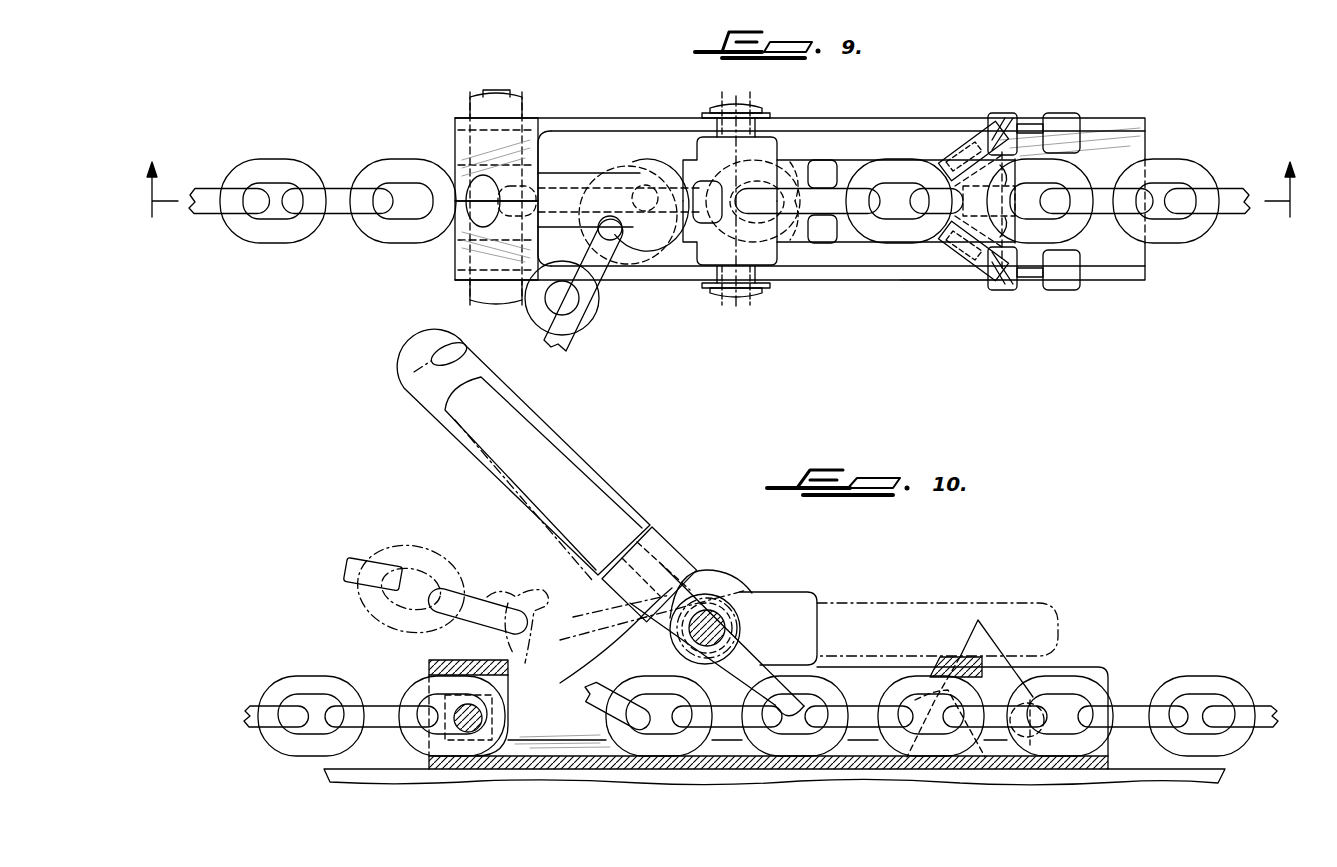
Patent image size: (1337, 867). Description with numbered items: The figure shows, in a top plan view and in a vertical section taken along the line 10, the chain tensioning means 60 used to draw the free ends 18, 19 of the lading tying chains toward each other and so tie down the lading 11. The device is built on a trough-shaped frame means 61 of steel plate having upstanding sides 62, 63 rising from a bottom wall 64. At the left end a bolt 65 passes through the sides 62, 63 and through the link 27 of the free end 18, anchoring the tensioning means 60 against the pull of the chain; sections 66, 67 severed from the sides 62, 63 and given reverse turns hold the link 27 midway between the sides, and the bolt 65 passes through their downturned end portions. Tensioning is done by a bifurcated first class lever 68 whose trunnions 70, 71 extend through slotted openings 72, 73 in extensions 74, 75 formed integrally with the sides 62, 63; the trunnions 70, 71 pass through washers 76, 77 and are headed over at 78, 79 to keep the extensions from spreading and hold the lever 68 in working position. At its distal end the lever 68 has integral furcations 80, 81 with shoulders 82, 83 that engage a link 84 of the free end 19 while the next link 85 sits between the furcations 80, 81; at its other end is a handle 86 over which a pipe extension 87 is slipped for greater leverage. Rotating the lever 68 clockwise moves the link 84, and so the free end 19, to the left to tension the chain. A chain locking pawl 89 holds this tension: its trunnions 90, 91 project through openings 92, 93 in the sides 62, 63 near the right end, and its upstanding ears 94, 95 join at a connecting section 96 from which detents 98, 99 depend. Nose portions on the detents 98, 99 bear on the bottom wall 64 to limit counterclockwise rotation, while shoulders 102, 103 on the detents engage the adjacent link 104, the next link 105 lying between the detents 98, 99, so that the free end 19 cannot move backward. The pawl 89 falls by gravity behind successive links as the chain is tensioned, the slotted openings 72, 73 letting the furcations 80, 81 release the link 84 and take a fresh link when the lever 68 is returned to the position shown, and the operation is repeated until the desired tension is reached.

In FIG. 9, the bed 10 is at (717, 203).
In FIG. 10, the lading 11 is at (523, 784).
In FIG. 9, the free end of chain 18 is at (310, 143).
In FIG. 10, the free end of chain 18 is at (252, 682).
In FIG. 9, the free end of chain 19 is at (1193, 149).
In FIG. 10, the free end of chain 19 is at (1179, 665).
In FIG. 9, the link 27 is at (422, 206).
In FIG. 10, the link 27 is at (420, 680).
In FIG. 9, the chain tensioning means 60 is at (600, 92).
In FIG. 10, the chain tensioning means 60 is at (971, 555).
In FIG. 9, the frame means 61 is at (1131, 102).
In FIG. 10, the frame means 61 is at (1121, 643).
In FIG. 9, the upstanding side 62 is at (895, 118).
In FIG. 10, the upstanding side 62 is at (563, 686).
In FIG. 9, the upstanding side 63 is at (921, 281).
In FIG. 9, the bottom wall 64 is at (580, 164).
In FIG. 10, the bottom wall 64 is at (568, 756).
In FIG. 9, the bolt 65 is at (498, 88).
In FIG. 10, the bolt 65 is at (485, 718).
In FIG. 9, the section 66 is at (455, 140).
In FIG. 10, the section 66 is at (458, 660).
In FIG. 9, the section 67 is at (455, 262).
In FIG. 9, the bifurcated first class lever 68 is at (633, 150).
In FIG. 10, the bifurcated first class lever 68 is at (692, 526).
In FIG. 9, the trunnion 70 is at (748, 118).
In FIG. 10, the trunnion 70 is at (724, 626).
In FIG. 9, the trunnion 71 is at (746, 293).
In FIG. 9, the slotted opening 72 is at (770, 130).
In FIG. 10, the slotted opening 72 is at (722, 592).
In FIG. 9, the slotted opening 73 is at (760, 284).
In FIG. 9, the extension 74 is at (823, 129).
In FIG. 10, the extension 74 is at (712, 566).
In FIG. 9, the extension 75 is at (840, 282).
In FIG. 9, the washer 76 is at (706, 114).
In FIG. 10, the washer 76 is at (672, 638).
In FIG. 9, the washer 77 is at (706, 289).
In FIG. 9, the headed-over end 78 is at (718, 103).
In FIG. 9, the headed-over end 79 is at (717, 302).
In FIG. 9, the furcation 80 is at (823, 168).
In FIG. 9, the furcation 81 is at (822, 239).
In FIG. 10, the furcation 81 is at (763, 660).
In FIG. 9, the shoulder 82 is at (786, 172).
In FIG. 9, the shoulder 83 is at (779, 240).
In FIG. 10, the shoulder 83 is at (766, 724).
In FIG. 9, the link 84 is at (657, 239).
In FIG. 10, the link 84 is at (727, 723).
In FIG. 9, the link 85 is at (872, 170).
In FIG. 10, the link 85 is at (825, 691).
In FIG. 9, the handle 86 is at (553, 181).
In FIG. 10, the handle 86 is at (560, 460).
In FIG. 10, the pipe extension 87 is at (538, 411).
In FIG. 9, the chain locking pawl 89 is at (1026, 111).
In FIG. 10, the chain locking pawl 89 is at (1032, 668).
In FIG. 9, the trunnion 90 is at (1063, 113).
In FIG. 10, the trunnion 90 is at (1027, 770).
In FIG. 9, the trunnion 91 is at (1060, 291).
In FIG. 9, the opening 92 is at (1083, 126).
In FIG. 9, the opening 93 is at (1083, 279).
In FIG. 9, the upstanding ear 94 is at (1001, 113).
In FIG. 10, the upstanding ear 94 is at (978, 620).
In FIG. 9, the upstanding ear 95 is at (1006, 291).
In FIG. 9, the connecting section 96 is at (1010, 189).
In FIG. 10, the connecting section 96 is at (950, 657).
In FIG. 9, the detent 98 is at (960, 146).
In FIG. 9, the detent 99 is at (970, 270).
In FIG. 9, the shoulder 102 is at (936, 171).
In FIG. 9, the shoulder 103 is at (931, 232).
In FIG. 9, the link 104 is at (870, 236).
In FIG. 10, the link 104 is at (863, 723).
In FIG. 9, the link 105 is at (911, 210).
In FIG. 10, the link 105 is at (893, 690).